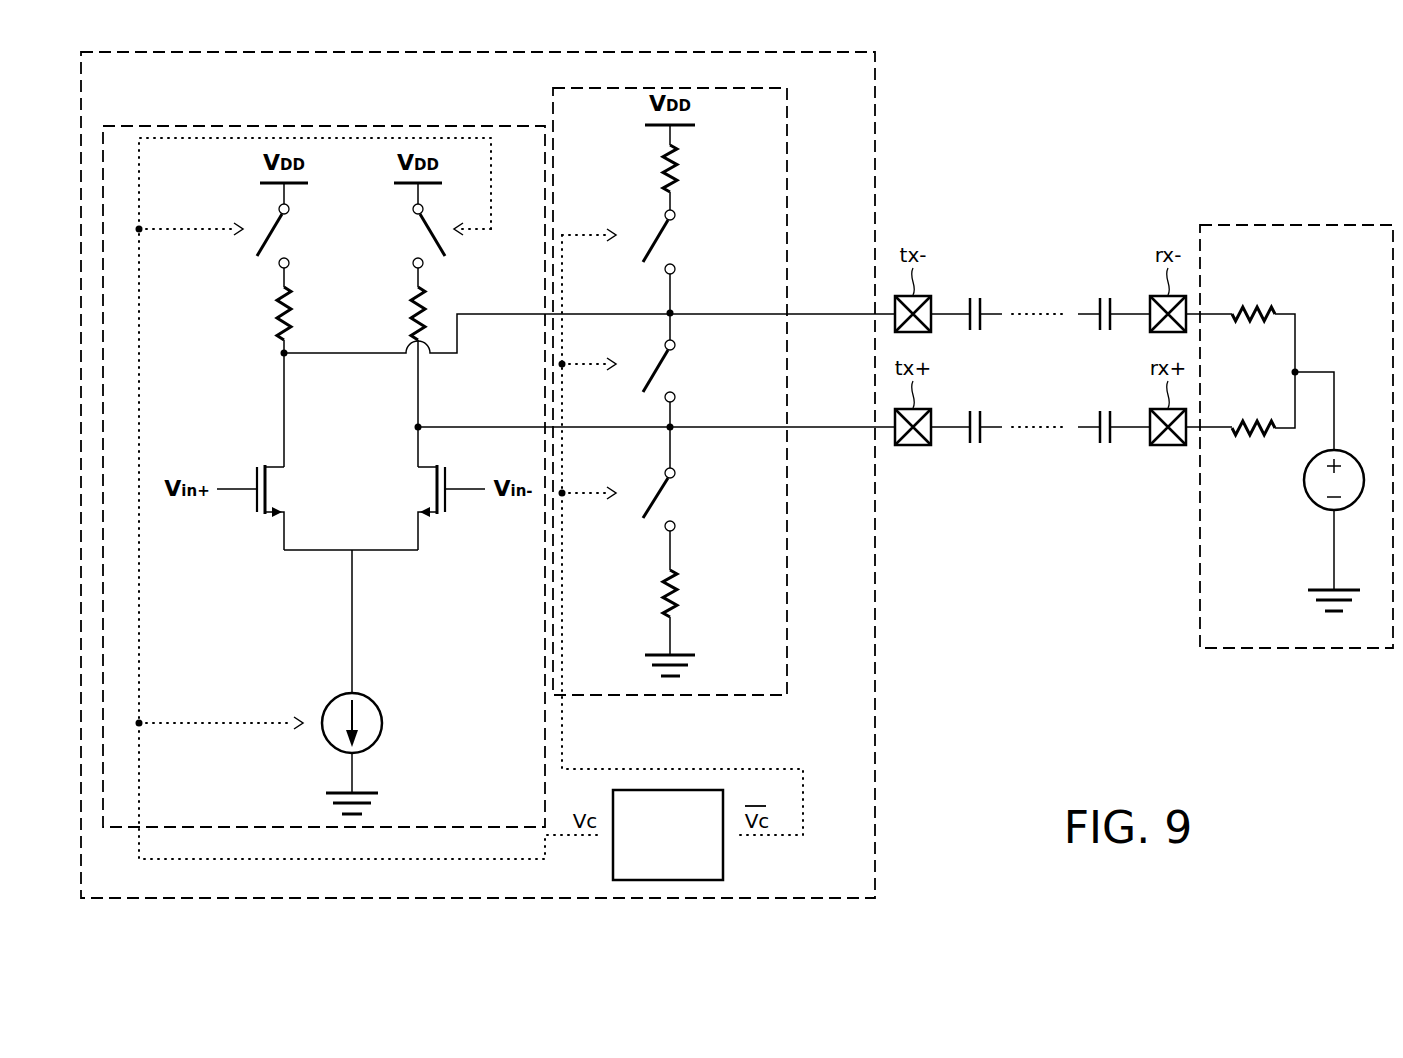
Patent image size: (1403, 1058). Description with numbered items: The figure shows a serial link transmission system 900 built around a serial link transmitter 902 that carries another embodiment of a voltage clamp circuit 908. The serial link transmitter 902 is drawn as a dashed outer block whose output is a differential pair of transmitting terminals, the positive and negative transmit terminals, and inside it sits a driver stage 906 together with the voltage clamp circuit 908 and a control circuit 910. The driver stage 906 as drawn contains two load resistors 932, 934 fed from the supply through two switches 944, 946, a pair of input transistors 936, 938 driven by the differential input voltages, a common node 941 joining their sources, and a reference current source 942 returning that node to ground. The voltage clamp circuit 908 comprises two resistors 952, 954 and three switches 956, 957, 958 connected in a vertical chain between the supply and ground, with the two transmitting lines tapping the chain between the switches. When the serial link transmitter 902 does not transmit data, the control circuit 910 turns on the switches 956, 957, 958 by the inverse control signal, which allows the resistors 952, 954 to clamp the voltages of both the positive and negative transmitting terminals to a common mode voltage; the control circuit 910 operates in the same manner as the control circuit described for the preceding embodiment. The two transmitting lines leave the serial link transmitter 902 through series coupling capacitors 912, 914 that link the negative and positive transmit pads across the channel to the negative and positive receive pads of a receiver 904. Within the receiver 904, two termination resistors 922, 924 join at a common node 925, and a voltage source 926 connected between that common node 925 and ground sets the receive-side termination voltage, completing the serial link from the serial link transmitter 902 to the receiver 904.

The communication system 900 is at (1308, 122).
The serial link transmitter 902 is at (877, 130).
The receiver 904 is at (1297, 225).
The differential driver 906 is at (360, 124).
The voltage clamp circuit 908 is at (552, 90).
The control circuit 910 is at (725, 858).
The coupling capacitors (negative channel) 912 is at (1105, 297).
The coupling capacitors (positive channel) 914 is at (1105, 410).
The termination resistor 922 is at (1250, 300).
The termination resistor 924 is at (1250, 415).
The common node 925 is at (1298, 369).
The voltage source 926 is at (1312, 505).
The load resistor 932 is at (275, 315).
The load resistor 934 is at (408, 315).
The transistor 936 is at (261, 512).
The transistor 938 is at (441, 512).
The common source node 941 is at (352, 550).
The reference current source 942 is at (375, 700).
The switch 944 is at (291, 236).
The switch 946 is at (414, 230).
The resistor 952 is at (685, 168).
The resistor 954 is at (657, 595).
The switch 956 is at (673, 241).
The switch 957 is at (675, 368).
The switch 958 is at (675, 497).